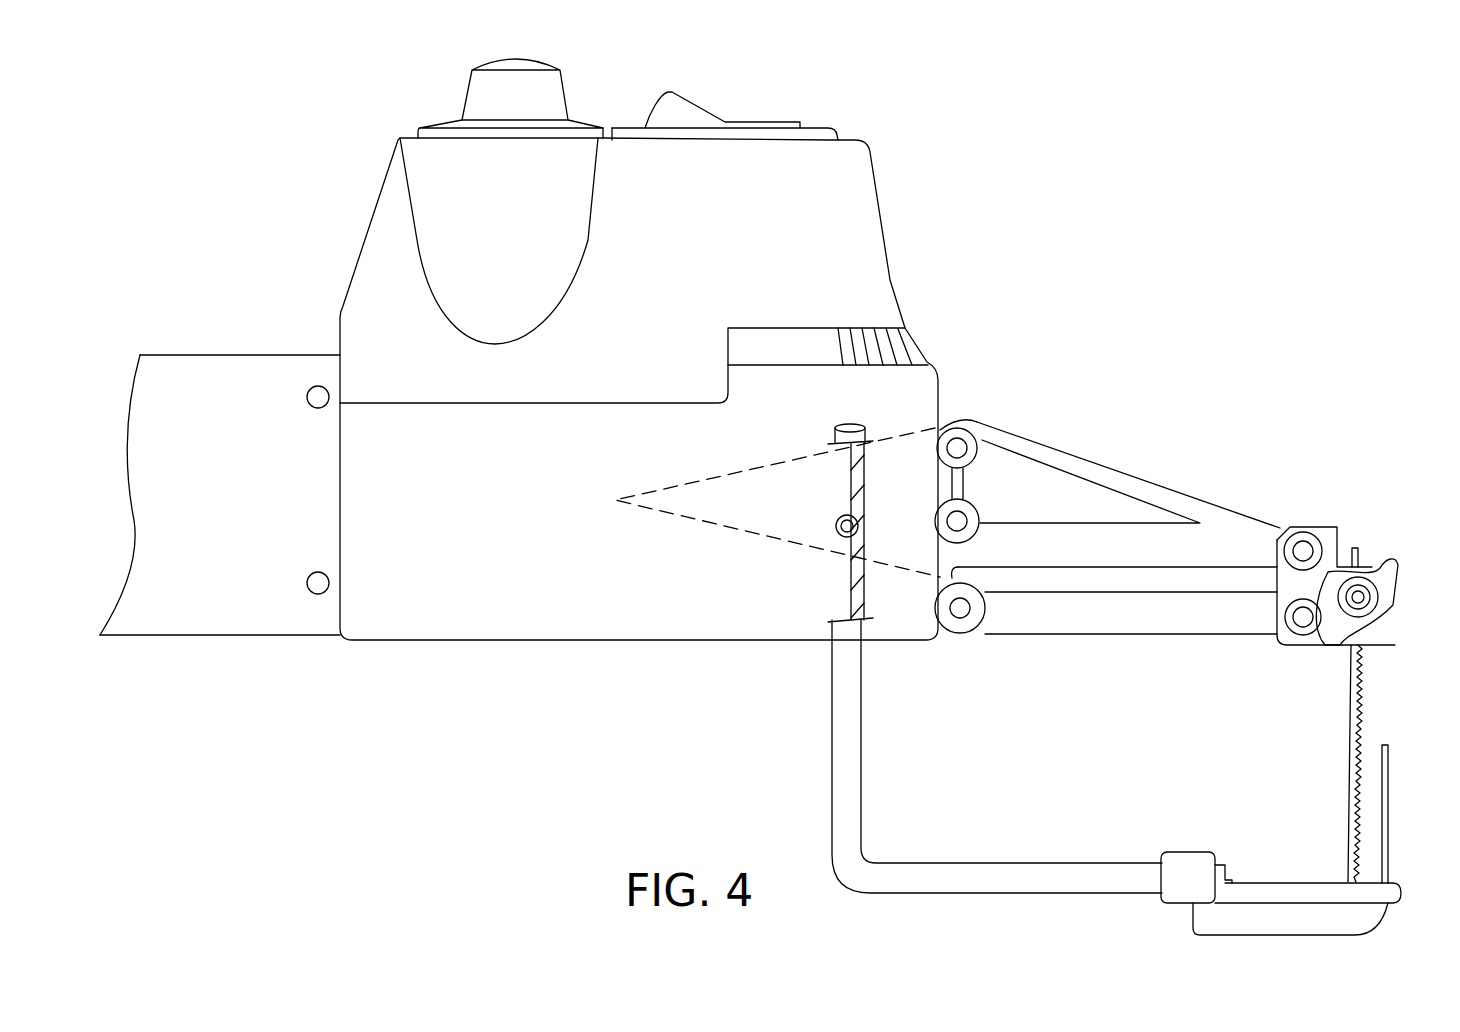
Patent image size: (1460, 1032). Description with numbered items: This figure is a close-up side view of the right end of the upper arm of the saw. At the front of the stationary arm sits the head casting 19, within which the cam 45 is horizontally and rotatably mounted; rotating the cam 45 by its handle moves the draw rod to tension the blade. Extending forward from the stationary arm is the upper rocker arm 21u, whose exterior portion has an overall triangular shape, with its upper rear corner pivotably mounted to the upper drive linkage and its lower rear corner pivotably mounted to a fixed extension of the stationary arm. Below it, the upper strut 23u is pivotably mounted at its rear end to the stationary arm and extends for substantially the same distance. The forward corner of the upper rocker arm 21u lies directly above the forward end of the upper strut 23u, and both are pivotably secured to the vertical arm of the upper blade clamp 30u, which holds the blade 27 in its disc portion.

The head casting 19 is at (865, 214).
The cam 45 is at (905, 350).
The upper rocker arm 21u is at (1105, 470).
The upper strut 23u is at (1052, 624).
The upper blade clamp 30u is at (1340, 547).
The blade 27 is at (1356, 713).